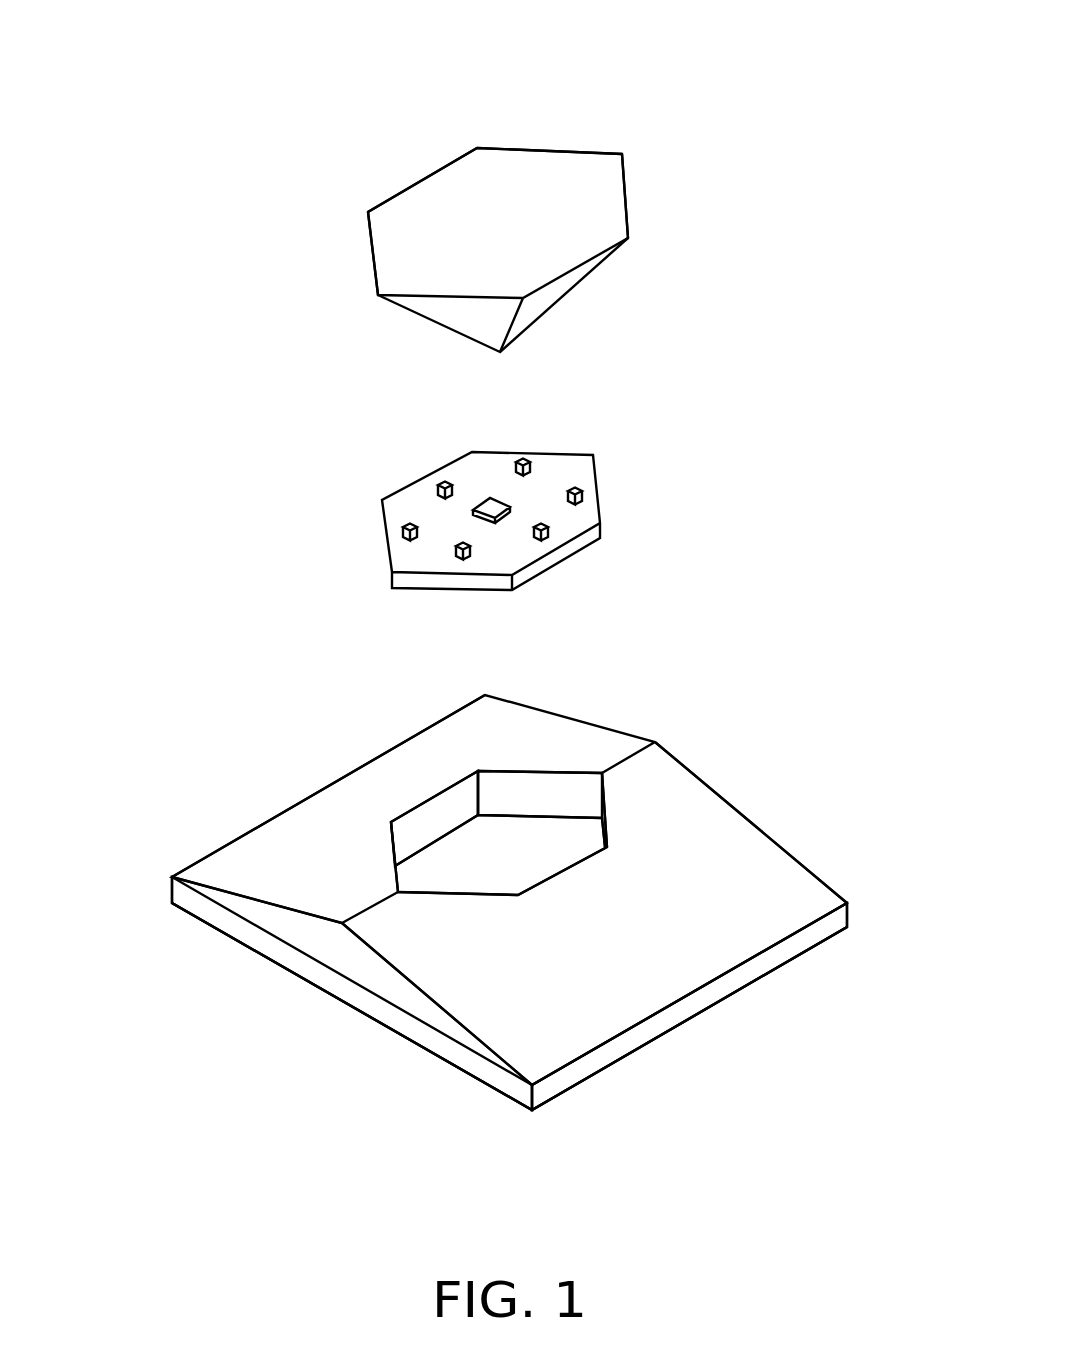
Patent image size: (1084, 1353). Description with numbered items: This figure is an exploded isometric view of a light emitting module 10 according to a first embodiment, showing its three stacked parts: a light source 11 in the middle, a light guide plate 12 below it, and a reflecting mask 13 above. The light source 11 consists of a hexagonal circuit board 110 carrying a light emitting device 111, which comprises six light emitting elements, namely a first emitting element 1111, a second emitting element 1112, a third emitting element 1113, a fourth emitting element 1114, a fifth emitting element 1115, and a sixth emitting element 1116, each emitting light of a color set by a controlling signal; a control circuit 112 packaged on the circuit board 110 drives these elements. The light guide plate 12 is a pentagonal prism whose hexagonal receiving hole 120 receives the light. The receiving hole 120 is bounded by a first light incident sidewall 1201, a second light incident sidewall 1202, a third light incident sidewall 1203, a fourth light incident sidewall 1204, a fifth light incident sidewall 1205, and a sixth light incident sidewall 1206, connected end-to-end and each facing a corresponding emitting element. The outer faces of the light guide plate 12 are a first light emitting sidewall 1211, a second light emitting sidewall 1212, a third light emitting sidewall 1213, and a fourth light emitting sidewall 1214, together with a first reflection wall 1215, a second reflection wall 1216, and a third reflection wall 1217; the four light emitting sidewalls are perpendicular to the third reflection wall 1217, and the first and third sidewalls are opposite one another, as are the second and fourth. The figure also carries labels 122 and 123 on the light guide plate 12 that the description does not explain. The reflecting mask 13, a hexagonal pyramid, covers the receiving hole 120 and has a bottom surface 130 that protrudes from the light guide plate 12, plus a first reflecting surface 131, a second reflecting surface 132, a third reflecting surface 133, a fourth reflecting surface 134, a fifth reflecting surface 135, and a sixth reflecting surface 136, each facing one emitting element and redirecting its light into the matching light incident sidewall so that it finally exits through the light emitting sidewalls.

The light emitting module 10 is at (534, 31).
The light source 11 is at (613, 448).
The circuit board 110 is at (583, 543).
The light emitting device 111 is at (285, 403).
The first emitting element 1111 is at (517, 460).
The second emitting element 1112 is at (438, 487).
The third emitting element 1113 is at (405, 530).
The fourth emitting element 1114 is at (458, 550).
The fifth emitting element 1115 is at (535, 540).
The sixth emitting element 1116 is at (578, 503).
The control circuit 112 is at (490, 510).
The light guide plate 12 is at (665, 722).
The receiving hole 120 is at (540, 838).
The first light incident sidewall 1201 is at (518, 798).
The second light incident sidewall 1202 is at (427, 817).
The third light incident sidewall 1203 is at (390, 853).
The fourth light incident sidewall 1204 is at (458, 895).
The fifth light incident sidewall 1205 is at (562, 878).
The sixth light incident sidewall 1206 is at (605, 820).
The first light emitting sidewall 1211 is at (783, 842).
The second light emitting sidewall 1212 is at (423, 727).
The third light emitting sidewall 1213 is at (258, 930).
The fourth light emitting sidewall 1214 is at (743, 977).
The first reflection wall 1215 is at (242, 873).
The second reflection wall 1216 is at (578, 1015).
The third reflection wall 1217 is at (327, 993).
The bottom surface of base 122 is at (812, 950).
The top surface of base 123 is at (773, 903).
The reflecting mask 13 is at (640, 148).
The bottom surface 130 is at (553, 225).
The first reflecting surface 131 is at (550, 148).
The second reflecting surface 132 is at (425, 175).
The third reflecting surface 133 is at (368, 255).
The fourth reflecting surface 134 is at (450, 317).
The fifth reflecting surface 135 is at (548, 295).
The sixth reflecting surface 136 is at (633, 212).